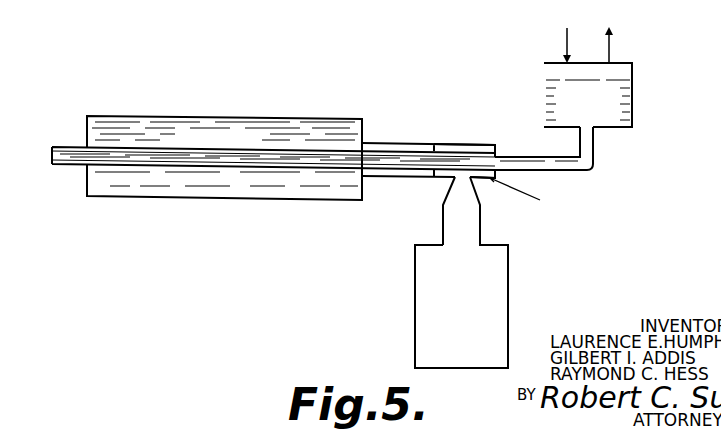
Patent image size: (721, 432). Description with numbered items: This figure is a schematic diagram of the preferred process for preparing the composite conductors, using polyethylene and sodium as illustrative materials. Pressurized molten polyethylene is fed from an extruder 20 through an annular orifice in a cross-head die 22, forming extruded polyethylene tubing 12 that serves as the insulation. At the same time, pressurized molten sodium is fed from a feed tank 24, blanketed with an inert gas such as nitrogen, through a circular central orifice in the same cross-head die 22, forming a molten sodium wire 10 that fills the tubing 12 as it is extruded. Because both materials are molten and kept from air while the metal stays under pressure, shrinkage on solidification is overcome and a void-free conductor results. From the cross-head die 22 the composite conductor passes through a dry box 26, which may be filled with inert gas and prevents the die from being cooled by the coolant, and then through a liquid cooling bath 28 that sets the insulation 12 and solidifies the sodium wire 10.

The sodium wire 10 is at (409, 160).
The extruded polyethylene tubing 12 is at (379, 168).
The extruder 20 is at (508, 268).
The cross-head die 22 is at (489, 181).
The feed tank 24 is at (632, 78).
The dry box 26 is at (415, 148).
The cooling bath 28 is at (132, 197).